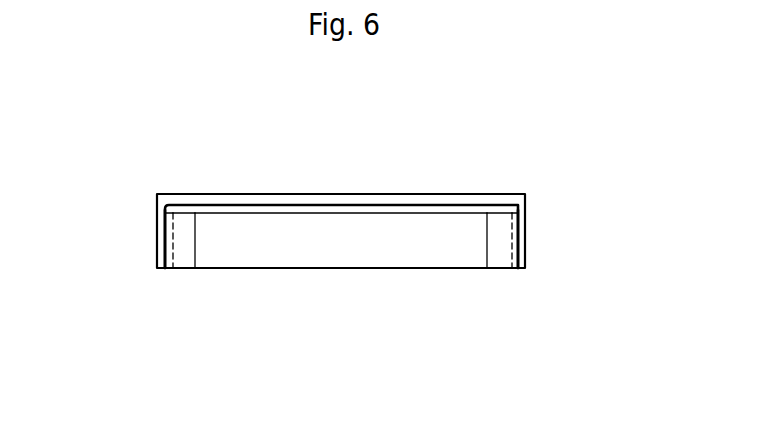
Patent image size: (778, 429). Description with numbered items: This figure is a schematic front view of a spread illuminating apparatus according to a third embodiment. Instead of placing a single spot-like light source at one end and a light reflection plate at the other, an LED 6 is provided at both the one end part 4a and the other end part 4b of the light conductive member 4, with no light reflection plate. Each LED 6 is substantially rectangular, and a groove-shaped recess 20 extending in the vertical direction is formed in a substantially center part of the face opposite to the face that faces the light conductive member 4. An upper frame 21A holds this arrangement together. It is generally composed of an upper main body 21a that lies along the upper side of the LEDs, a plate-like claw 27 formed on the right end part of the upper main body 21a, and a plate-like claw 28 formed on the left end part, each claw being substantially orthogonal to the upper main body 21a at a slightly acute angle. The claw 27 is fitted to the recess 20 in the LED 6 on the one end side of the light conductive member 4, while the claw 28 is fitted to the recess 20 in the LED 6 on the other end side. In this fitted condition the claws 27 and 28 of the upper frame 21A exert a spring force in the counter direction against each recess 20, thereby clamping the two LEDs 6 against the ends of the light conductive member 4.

The upper frame 21A is at (548, 185).
The upper main body 21a is at (402, 197).
The plate-like claw 28 is at (165, 223).
The plate-like claw 27 is at (520, 223).
The recess 20 is at (172, 243).
The LED 6 is at (182, 257).
The light conductive member 4 is at (353, 250).
The other end part of light conductive member 4b is at (195, 242).
The one end part of light conductive member 4a is at (487, 237).